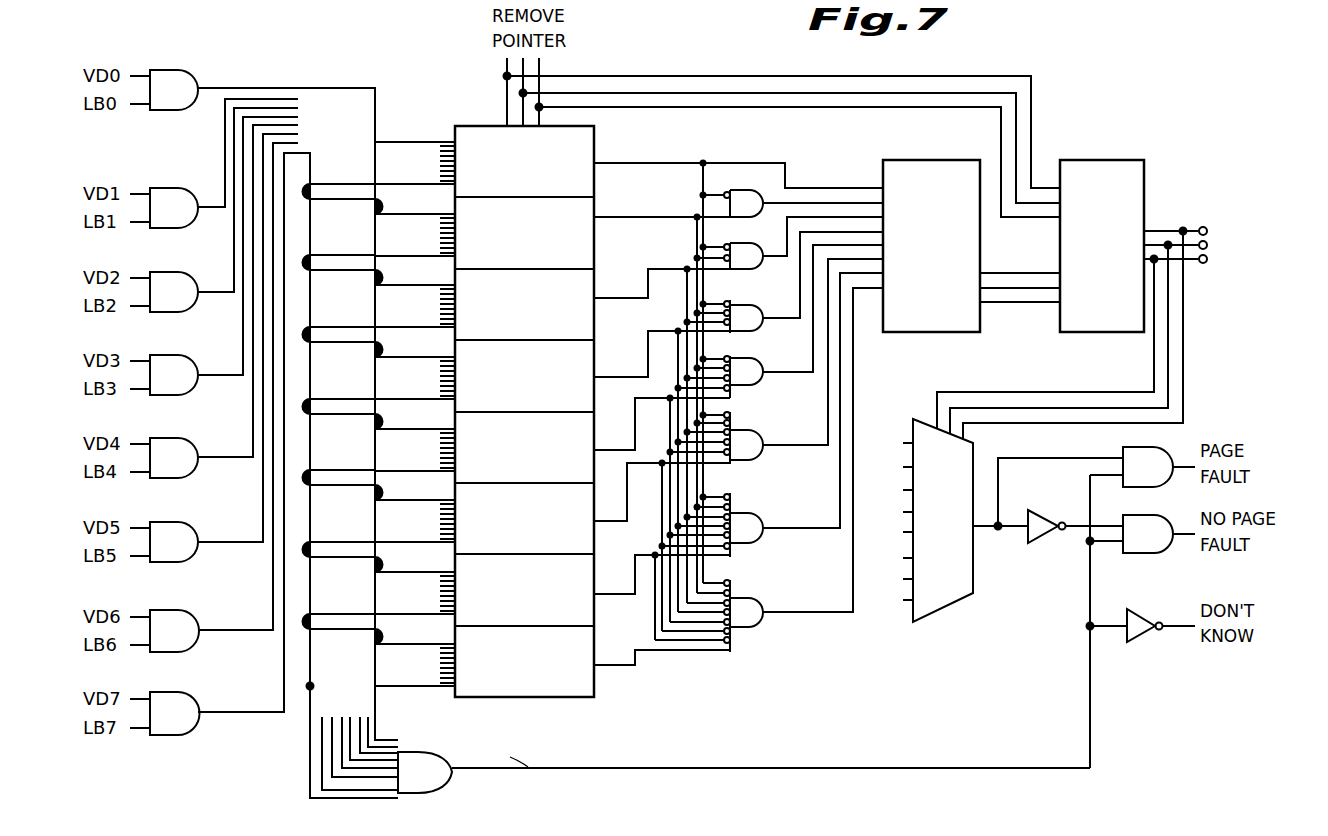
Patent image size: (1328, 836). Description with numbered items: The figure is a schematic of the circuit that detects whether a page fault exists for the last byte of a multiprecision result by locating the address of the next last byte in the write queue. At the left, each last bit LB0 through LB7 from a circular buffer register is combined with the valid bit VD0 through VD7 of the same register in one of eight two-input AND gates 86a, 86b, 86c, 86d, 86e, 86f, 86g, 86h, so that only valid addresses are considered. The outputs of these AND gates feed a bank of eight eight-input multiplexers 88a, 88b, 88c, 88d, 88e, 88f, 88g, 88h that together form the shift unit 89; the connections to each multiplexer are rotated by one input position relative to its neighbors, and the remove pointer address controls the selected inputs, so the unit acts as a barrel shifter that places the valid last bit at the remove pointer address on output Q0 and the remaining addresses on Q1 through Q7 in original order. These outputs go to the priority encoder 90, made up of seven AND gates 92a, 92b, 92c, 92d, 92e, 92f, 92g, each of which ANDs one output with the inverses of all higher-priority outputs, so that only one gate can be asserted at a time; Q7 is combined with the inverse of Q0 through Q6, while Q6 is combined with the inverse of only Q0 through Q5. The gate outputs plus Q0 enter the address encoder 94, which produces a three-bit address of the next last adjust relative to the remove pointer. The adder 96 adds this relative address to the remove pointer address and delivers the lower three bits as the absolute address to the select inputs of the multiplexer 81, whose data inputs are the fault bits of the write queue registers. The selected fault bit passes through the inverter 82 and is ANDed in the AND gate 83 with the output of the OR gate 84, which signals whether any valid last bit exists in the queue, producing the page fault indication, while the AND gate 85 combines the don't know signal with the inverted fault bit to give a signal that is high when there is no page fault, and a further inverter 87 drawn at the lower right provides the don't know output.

The multiplexer 81 is at (936, 622).
The inverter 82 is at (1045, 548).
The AND gate 83 is at (1126, 446).
The OR gate 84 is at (432, 752).
The AND gate 85 is at (1134, 516).
The AND gate 86a is at (161, 67).
The AND gate 86b is at (161, 184).
The AND gate 86c is at (161, 269).
The AND gate 86d is at (161, 352).
The AND gate 86e is at (161, 435).
The AND gate 86f is at (161, 519).
The AND gate 86g is at (161, 609).
The AND gate 86h is at (169, 695).
The inverter (don't know) 87 is at (1138, 642).
The multiplexer 88a is at (389, 128).
The multiplexer 88b is at (389, 200).
The multiplexer 88c is at (389, 271).
The multiplexer 88d is at (389, 343).
The multiplexer 88e is at (389, 415).
The multiplexer 88f is at (389, 486).
The multiplexer 88g is at (433, 568).
The multiplexer 88h is at (433, 640).
The shift unit 89 is at (598, 157).
The priority encoder 90 is at (730, 158).
The AND gate 92a is at (733, 190).
The AND gate 92b is at (733, 243).
The AND gate 92c is at (745, 303).
The AND gate 92d is at (753, 366).
The AND gate 92e is at (758, 434).
The AND gate 92f is at (761, 511).
The AND gate 92g is at (762, 597).
The address encoder 94 is at (912, 160).
The adder 96 is at (1121, 160).